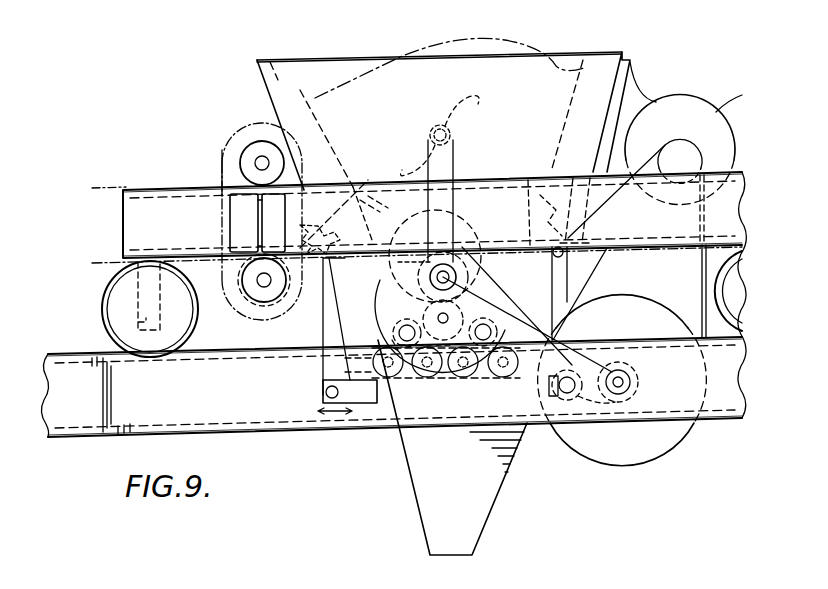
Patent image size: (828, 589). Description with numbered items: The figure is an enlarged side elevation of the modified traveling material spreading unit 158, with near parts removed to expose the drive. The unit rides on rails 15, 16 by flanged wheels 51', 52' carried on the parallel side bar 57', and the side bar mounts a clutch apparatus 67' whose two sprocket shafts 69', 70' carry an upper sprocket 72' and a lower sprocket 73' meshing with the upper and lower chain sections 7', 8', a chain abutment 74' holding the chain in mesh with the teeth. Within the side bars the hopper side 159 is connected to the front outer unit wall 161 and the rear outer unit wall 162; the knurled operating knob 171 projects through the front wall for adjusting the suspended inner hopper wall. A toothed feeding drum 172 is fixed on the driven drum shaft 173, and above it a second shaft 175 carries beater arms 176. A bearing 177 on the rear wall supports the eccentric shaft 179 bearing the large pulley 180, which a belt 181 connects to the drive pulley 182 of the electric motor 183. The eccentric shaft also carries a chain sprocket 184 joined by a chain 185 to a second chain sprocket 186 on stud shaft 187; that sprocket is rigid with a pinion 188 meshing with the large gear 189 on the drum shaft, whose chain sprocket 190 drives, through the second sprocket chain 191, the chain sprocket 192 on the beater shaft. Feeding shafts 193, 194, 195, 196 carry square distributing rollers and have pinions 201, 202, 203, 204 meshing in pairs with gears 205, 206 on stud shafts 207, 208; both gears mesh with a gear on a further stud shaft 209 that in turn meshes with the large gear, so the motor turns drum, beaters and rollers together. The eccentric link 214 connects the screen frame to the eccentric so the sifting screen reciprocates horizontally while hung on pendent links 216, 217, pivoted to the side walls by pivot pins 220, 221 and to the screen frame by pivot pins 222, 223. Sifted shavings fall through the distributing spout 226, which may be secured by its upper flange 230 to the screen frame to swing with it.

The upper chain section 7' is at (109, 173).
The lower chain section 8' is at (412, 250).
The rail 15 is at (80, 424).
The rail 16 is at (292, 428).
The flanged wheel 51' is at (126, 309).
The flanged wheel 52' is at (680, 263).
The side bar 57' is at (413, 215).
The clutch apparatus 67' is at (218, 108).
The sprocket shaft 69' is at (231, 163).
The sprocket shaft 70' is at (247, 291).
The upper sprocket 72' is at (245, 221).
The lower sprocket 73' is at (259, 331).
The chain abutment 74' is at (235, 223).
The traveling material spreading unit 158 is at (640, 40).
The hopper side 159 is at (288, 66).
The front outer unit wall 161 is at (258, 80).
The rear outer unit wall 162 is at (630, 62).
The knurled operating knob 171 is at (334, 214).
The toothed feeding drum 172 is at (379, 212).
The drum shaft 173 is at (398, 285).
The second shaft 175 is at (455, 136).
The beater arms 176 is at (478, 101).
The bearing 177 is at (570, 284).
The eccentric shaft 179 is at (632, 381).
The large pulley 180 is at (690, 428).
The belt 181 is at (708, 302).
The drive pulley 182 is at (697, 145).
The electric motor 183 is at (717, 110).
The chain sprocket 184 is at (628, 420).
The chain 185 is at (606, 326).
The second chain sprocket 186 is at (488, 199).
The stud shaft 187 is at (435, 253).
The pinion 188 is at (531, 215).
The large gear 189 is at (398, 266).
The chain sprocket 190 is at (392, 300).
The second sprocket chain 191 is at (458, 163).
The chain sprocket 192 is at (433, 130).
The feeding shaft 193 is at (332, 361).
The feeding shaft 194 is at (446, 381).
The feeding shaft 195 is at (439, 370).
The feeding shaft 196 is at (481, 370).
The pinion 201 is at (326, 390).
The pinion 202 is at (394, 371).
The pinion 203 is at (458, 403).
The pinion 204 is at (503, 380).
The gear 205 is at (396, 340).
The gear 206 is at (495, 330).
The stud shaft 207 is at (400, 328).
The stud shaft 208 is at (516, 282).
The further stud shaft 209 is at (545, 40).
The eccentric link 214 is at (360, 405).
The pendent link 216 is at (328, 335).
The pendent link 217 is at (553, 248).
The pivot pin 220 is at (336, 239).
The pivot pin 221 is at (565, 210).
The pivot pin 222 is at (278, 398).
The pivot pin 223 is at (570, 377).
The distributing spout 226 is at (398, 467).
The upper flange 230 is at (353, 403).